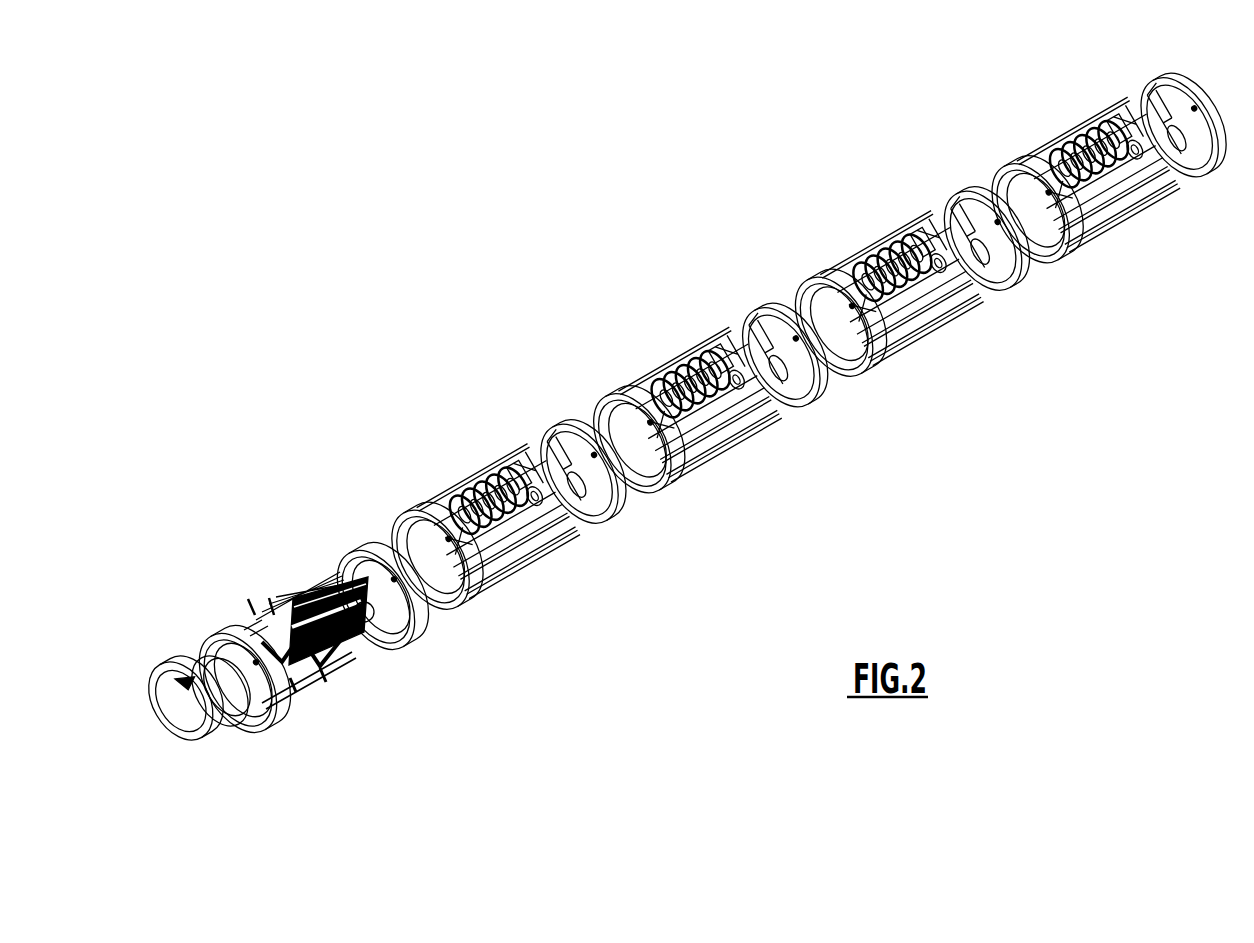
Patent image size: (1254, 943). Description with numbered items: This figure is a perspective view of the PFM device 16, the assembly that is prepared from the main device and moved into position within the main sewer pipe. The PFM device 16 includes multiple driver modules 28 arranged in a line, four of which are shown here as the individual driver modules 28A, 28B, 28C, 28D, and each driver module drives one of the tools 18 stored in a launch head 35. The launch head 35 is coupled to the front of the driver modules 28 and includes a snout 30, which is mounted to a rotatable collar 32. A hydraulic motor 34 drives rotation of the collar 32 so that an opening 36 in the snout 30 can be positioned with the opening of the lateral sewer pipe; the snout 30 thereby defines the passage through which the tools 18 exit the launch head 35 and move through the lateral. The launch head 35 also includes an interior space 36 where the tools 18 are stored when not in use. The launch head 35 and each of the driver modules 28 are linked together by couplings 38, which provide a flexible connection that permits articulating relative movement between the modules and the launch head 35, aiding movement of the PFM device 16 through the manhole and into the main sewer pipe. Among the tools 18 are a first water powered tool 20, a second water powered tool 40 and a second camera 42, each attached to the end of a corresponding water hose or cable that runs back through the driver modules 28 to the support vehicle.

The PFM device 16 is at (336, 362).
The tools 18 is at (323, 692).
The first water powered tool 20 is at (368, 650).
The driver modules 28 is at (530, 659).
The first driver module 28A is at (560, 528).
The second driver module 28B is at (747, 420).
The third driver module 28C is at (935, 310).
The fourth driver module 28D is at (1123, 203).
The snout 30 is at (170, 663).
The rotatable collar 32 is at (226, 641).
The hydraulic motor 34 is at (292, 698).
The launch head 35 is at (418, 737).
The opening 36 is at (204, 712).
The couplings 38 is at (436, 624).
The second water powered tool 40 is at (323, 592).
The second camera 42 is at (294, 598).